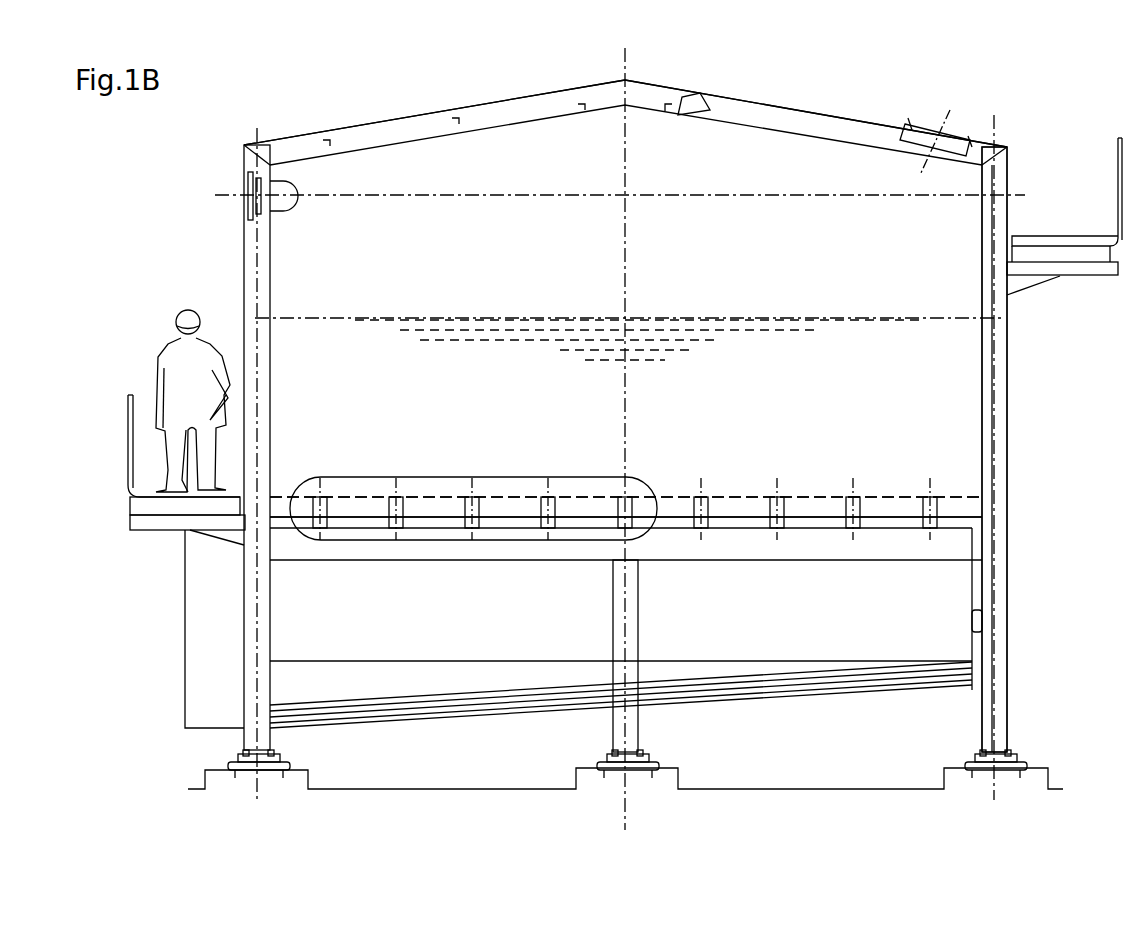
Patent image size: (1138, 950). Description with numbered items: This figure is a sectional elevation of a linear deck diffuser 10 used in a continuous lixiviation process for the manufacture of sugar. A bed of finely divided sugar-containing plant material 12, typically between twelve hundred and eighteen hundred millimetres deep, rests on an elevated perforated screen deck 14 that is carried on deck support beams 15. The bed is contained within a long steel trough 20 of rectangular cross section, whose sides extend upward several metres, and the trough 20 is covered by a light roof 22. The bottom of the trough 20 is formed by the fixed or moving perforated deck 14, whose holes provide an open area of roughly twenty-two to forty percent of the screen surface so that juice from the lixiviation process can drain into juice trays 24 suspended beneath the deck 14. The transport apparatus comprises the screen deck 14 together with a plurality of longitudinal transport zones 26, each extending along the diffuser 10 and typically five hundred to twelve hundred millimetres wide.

The linear deck diffuser 10 is at (897, 102).
The bed of finely divided sugar-containing plant material 12 is at (766, 320).
The perforated screen deck 14 is at (897, 497).
The deck support beams 15 is at (470, 497).
The steel trough 20 is at (975, 482).
The roof 22 is at (803, 120).
The juice trays 24 is at (357, 690).
The longitudinal transport zones 26 is at (505, 497).